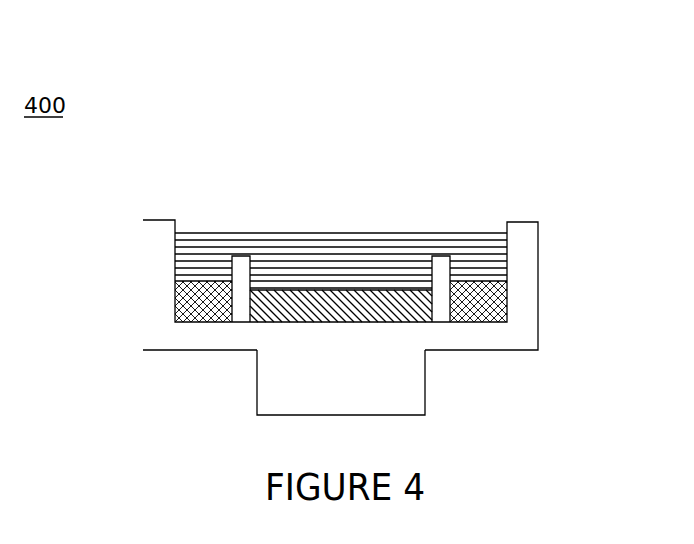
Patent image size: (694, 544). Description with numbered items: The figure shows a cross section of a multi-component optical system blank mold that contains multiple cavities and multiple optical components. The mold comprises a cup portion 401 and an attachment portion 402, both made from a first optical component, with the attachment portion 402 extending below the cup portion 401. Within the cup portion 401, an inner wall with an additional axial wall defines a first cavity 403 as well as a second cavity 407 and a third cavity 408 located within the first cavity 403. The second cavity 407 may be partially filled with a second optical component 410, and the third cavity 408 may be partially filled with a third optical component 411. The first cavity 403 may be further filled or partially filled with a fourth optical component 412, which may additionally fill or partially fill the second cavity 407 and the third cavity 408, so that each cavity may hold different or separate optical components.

The cup portion 401 is at (540, 256).
The attachment portion 402 is at (428, 384).
The first cavity 403 is at (490, 232).
The second cavity 407 is at (340, 258).
The third cavity 408 is at (205, 253).
The second optical component 410 is at (470, 263).
The third optical component 411 is at (294, 262).
The fourth optical component 412 is at (260, 217).